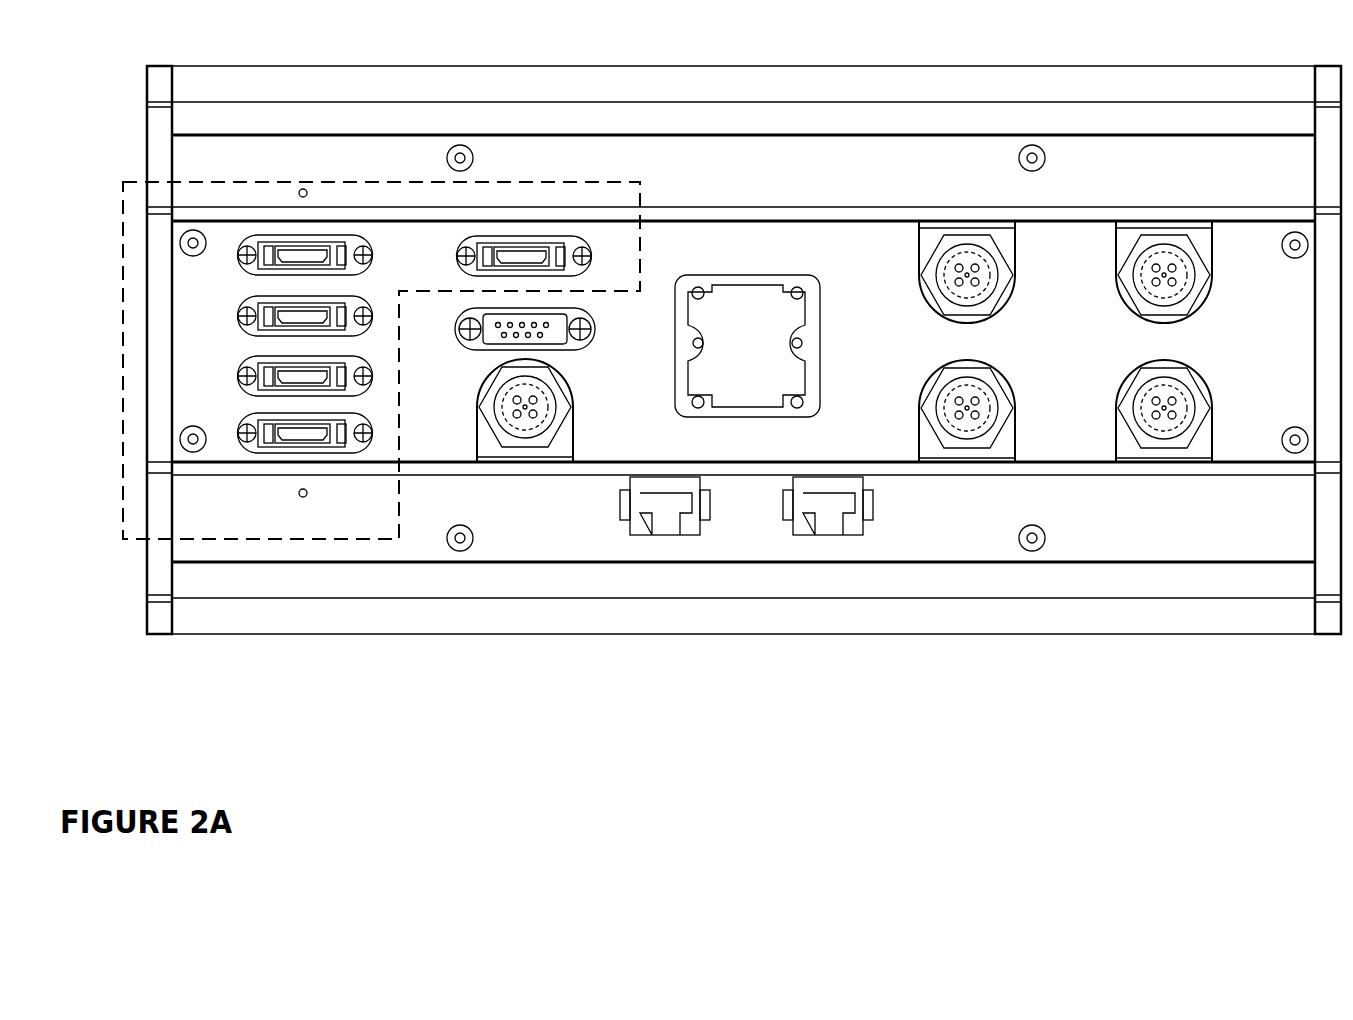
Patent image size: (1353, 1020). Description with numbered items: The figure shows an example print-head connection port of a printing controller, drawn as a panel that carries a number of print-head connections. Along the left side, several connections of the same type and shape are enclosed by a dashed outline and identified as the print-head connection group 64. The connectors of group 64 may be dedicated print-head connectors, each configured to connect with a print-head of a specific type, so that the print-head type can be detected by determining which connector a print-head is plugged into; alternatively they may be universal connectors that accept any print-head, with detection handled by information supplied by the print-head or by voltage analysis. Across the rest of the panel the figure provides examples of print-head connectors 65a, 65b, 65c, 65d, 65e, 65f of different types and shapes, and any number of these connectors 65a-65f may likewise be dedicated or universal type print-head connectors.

The print-head connection group 64 is at (123, 332).
The print-head connector 65a is at (570, 344).
The print-head connector 65b is at (560, 445).
The print-head connector 65c is at (930, 248).
The print-head connector 65d is at (1122, 255).
The print-head connector 65e is at (927, 430).
The print-head connector 65f is at (1205, 438).